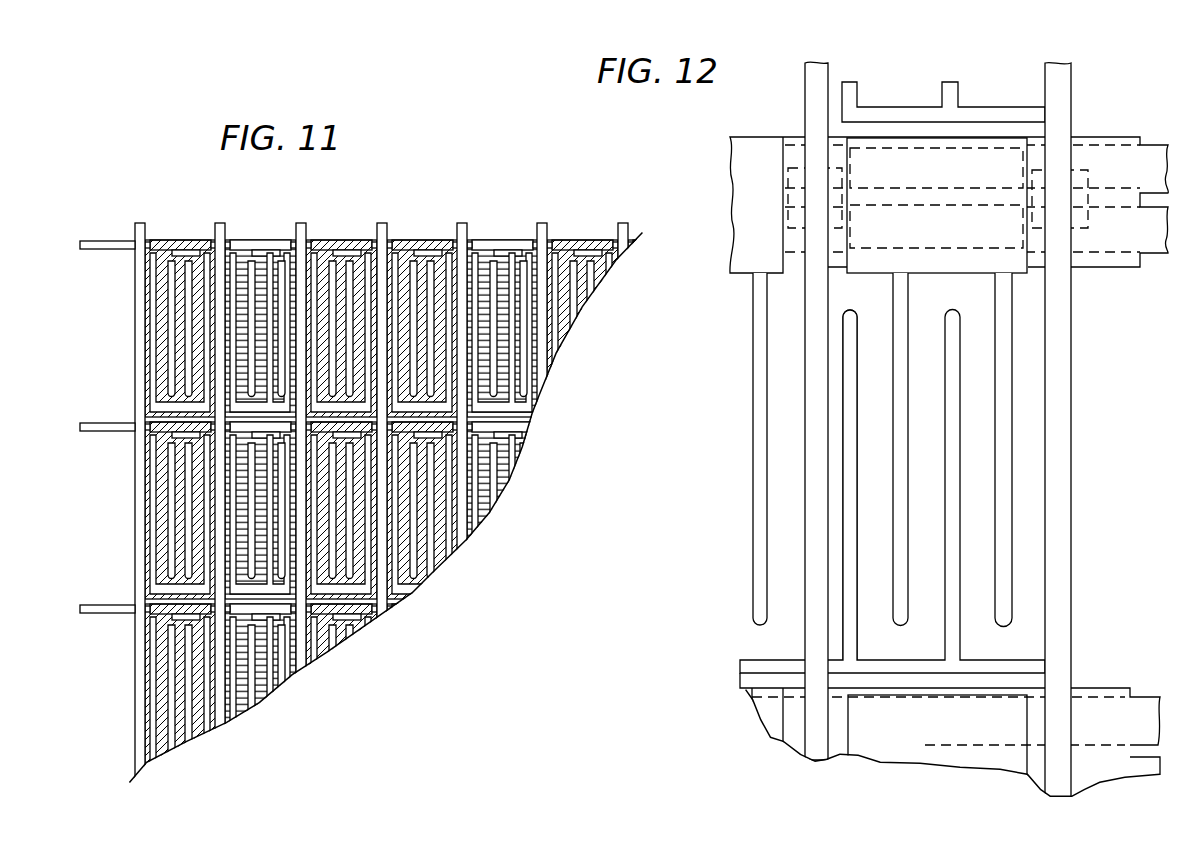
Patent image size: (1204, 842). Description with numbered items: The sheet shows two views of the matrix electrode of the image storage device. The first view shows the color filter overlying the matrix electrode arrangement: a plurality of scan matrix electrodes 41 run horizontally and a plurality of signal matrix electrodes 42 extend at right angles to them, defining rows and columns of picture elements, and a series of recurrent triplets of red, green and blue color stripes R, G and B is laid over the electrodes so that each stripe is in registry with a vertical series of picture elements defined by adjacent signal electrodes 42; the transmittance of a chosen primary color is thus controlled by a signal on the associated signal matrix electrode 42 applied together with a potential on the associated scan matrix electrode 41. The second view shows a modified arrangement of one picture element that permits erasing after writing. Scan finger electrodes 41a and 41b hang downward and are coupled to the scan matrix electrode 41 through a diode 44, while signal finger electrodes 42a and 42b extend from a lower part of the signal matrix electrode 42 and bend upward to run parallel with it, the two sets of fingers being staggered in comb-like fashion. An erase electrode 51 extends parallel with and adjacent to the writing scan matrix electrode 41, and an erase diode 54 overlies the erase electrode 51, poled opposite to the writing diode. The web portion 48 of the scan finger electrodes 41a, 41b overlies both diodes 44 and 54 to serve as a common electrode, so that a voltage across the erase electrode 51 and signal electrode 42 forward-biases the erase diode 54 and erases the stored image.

In FIG. 11, the scan matrix electrode 41 is at (100, 250).
In FIG. 12, the scan matrix electrode 41 is at (1163, 157).
In FIG. 11, the signal matrix electrode 42 is at (139, 223).
In FIG. 12, the signal matrix electrode 42 is at (938, 430).
In FIG. 12, the scan finger electrode 41a is at (1012, 386).
In FIG. 12, the scan finger electrode 41b is at (908, 428).
In FIG. 12, the signal finger electrode 42a is at (960, 596).
In FIG. 12, the signal finger electrode 42b is at (858, 620).
In FIG. 12, the diode 44 is at (998, 157).
In FIG. 12, the web portion 48 is at (847, 155).
In FIG. 12, the erase electrode 51 is at (1163, 230).
In FIG. 12, the erase diode 54 is at (1010, 245).
In FIG. 11, the red color stripe R is at (164, 247).
In FIG. 11, the green color stripe G is at (244, 255).
In FIG. 11, the blue color stripe B is at (329, 250).